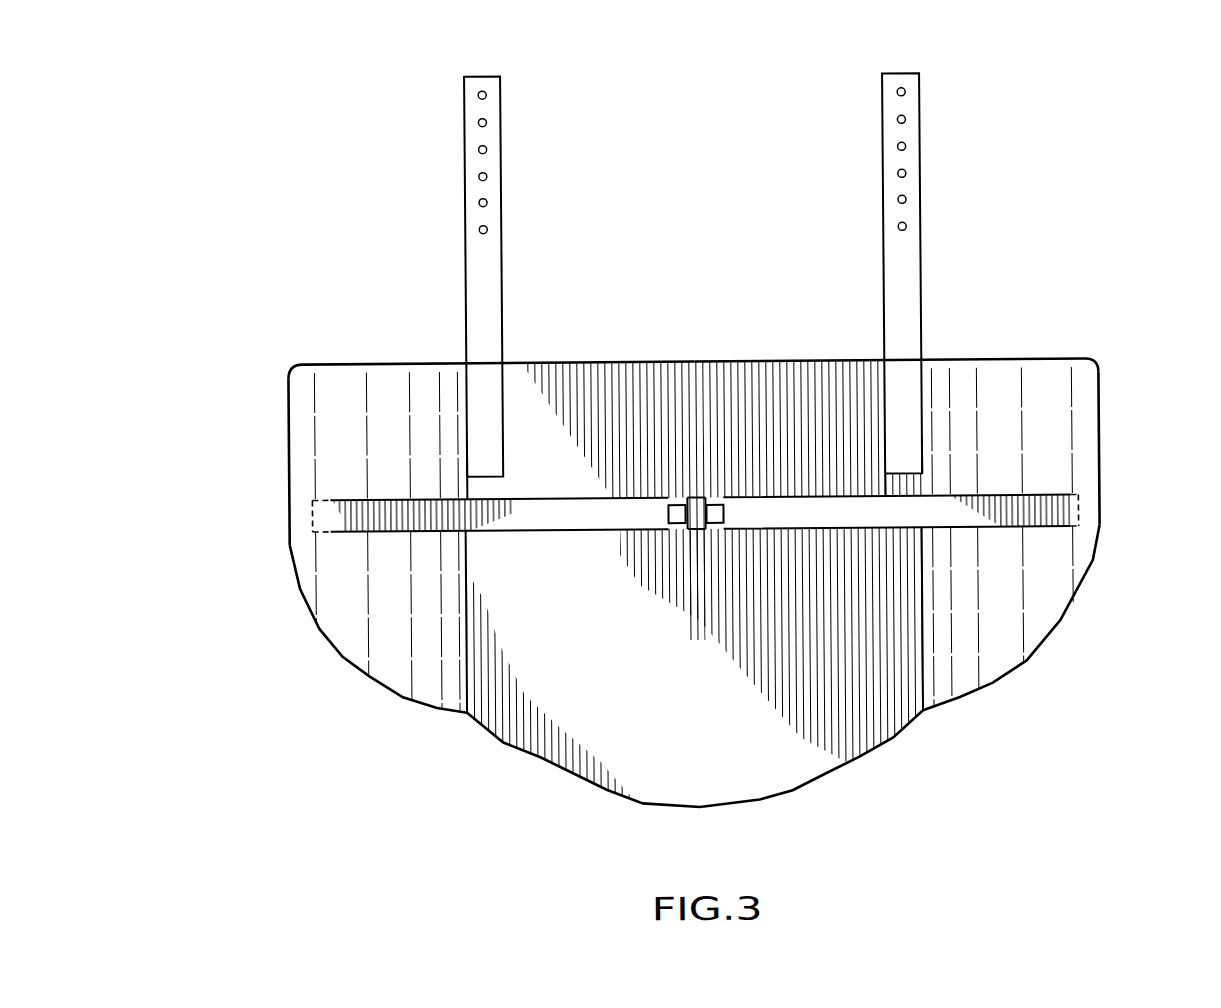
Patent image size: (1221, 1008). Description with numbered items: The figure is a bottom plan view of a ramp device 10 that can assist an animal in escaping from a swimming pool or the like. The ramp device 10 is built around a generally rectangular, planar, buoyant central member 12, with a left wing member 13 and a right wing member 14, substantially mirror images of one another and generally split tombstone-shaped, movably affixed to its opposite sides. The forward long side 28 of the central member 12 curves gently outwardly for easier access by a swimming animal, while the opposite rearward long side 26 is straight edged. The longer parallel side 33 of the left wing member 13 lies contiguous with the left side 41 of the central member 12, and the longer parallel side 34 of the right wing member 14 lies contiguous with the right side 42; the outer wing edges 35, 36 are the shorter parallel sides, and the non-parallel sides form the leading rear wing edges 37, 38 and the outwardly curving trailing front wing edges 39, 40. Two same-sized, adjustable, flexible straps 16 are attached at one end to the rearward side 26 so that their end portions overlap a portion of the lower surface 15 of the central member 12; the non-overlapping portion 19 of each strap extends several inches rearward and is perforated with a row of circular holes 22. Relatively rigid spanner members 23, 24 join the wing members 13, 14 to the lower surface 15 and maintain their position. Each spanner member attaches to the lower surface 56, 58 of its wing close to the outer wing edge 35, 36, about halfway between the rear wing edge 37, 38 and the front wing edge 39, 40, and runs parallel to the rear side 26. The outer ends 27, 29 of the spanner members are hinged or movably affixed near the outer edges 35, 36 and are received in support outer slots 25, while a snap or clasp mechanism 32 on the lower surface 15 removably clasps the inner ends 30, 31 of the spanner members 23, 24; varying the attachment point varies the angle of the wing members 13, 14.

The ramp device 10 is at (1165, 157).
The central member 12 is at (592, 357).
The left wing member 13 is at (331, 655).
The right wing member 14 is at (1102, 580).
The lower surface of the central member 15 is at (778, 418).
The flexible straps 16 is at (506, 209).
The non-overlapping portion of the flexible strap 19 is at (473, 248).
The circular holes 22 is at (490, 176).
The left spanner member 23 is at (343, 514).
The right spanner member 24 is at (1024, 517).
The support outer slots 25 is at (312, 529).
The rearward long side of the central member 26 is at (693, 362).
The outer end of the left spanner member 27 is at (312, 498).
The forward long side of the central member 28 is at (780, 798).
The outer end of the right spanner member 29 is at (1078, 525).
The inner end of the left spanner member 30 is at (669, 525).
The inner end of the right spanner member 31 is at (722, 525).
The clasp mechanism 32 is at (681, 525).
The longer parallel side of the left wing member 33 is at (465, 665).
The longer parallel side of the right wing member 34 is at (921, 652).
The outer wing edge of the left wing member 35 is at (289, 387).
The outer wing edge of the right wing member 36 is at (1100, 411).
The leading rear wing edge of the left wing member 37 is at (383, 361).
The leading rear wing edge of the right wing member 38 is at (1027, 362).
The trailing front wing edge of the left wing member 39 is at (383, 683).
The trailing front wing edge of the right wing member 40 is at (1035, 663).
The left side of the central member 41 is at (465, 691).
The right side of the central member 42 is at (918, 689).
The lower surface of the left wing member 56 is at (339, 564).
The lower surface of the right wing member 58 is at (1045, 603).